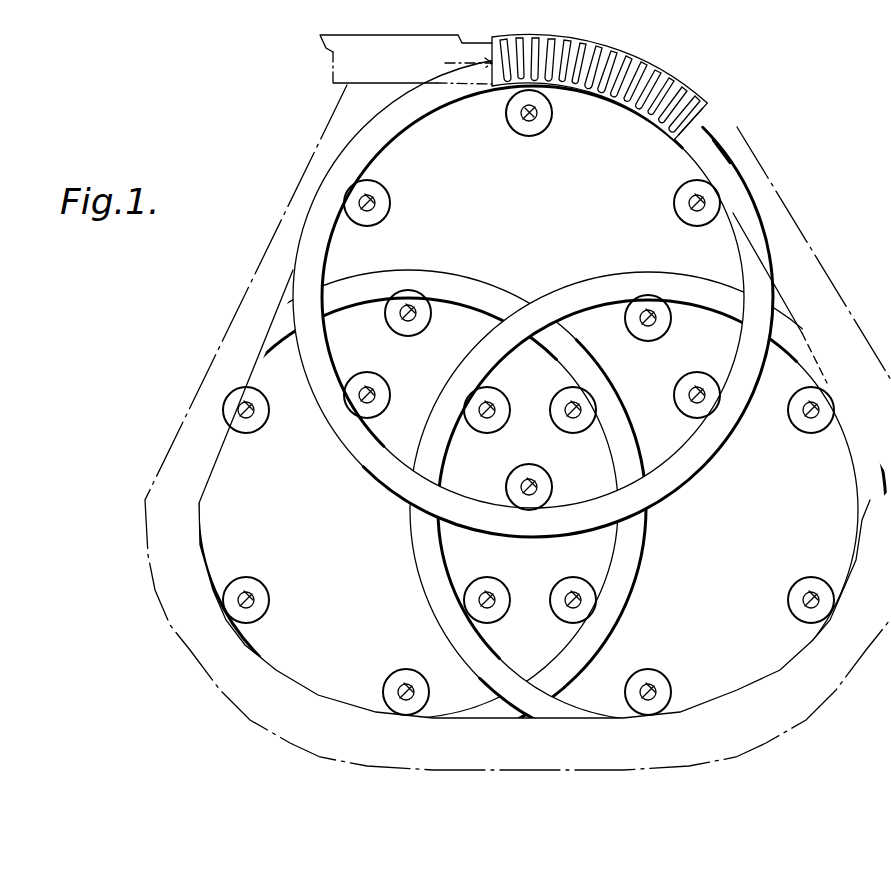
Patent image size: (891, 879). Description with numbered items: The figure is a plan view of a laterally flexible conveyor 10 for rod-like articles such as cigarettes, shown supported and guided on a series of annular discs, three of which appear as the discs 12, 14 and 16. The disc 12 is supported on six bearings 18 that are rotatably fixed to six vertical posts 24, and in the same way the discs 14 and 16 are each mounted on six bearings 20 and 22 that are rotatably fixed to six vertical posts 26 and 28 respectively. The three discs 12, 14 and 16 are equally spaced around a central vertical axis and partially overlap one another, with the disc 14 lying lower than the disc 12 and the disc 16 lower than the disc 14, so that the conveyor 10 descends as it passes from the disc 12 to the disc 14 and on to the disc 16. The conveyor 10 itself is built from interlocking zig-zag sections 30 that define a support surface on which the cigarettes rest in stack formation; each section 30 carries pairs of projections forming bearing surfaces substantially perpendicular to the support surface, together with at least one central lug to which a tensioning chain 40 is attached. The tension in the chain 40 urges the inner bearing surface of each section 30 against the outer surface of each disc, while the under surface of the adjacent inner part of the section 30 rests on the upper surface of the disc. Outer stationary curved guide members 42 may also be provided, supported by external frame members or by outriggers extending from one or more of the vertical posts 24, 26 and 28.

The laterally flexible conveyor 10 is at (755, 145).
The annular disc 12 is at (417, 112).
The annular disc 14 is at (797, 340).
The annular disc 16 is at (283, 318).
The bearings 18 is at (528, 137).
The bearings 20 is at (645, 341).
The bearings 22 is at (417, 334).
The vertical posts 24 is at (536, 117).
The vertical posts 26 is at (641, 320).
The vertical posts 28 is at (416, 316).
The zig-zag sections 30 is at (662, 62).
The tensioning chain 40 is at (445, 63).
The outer stationary curved guide members 42 is at (457, 38).